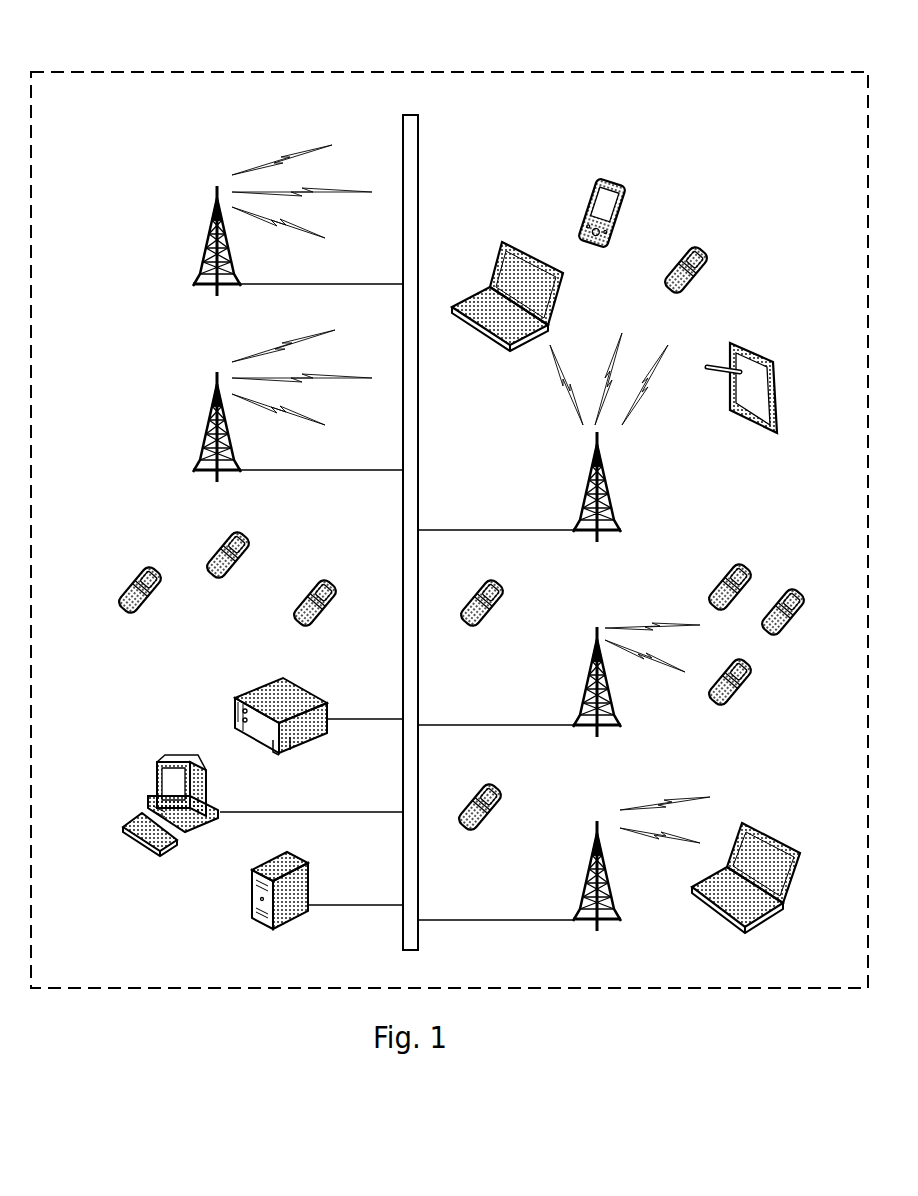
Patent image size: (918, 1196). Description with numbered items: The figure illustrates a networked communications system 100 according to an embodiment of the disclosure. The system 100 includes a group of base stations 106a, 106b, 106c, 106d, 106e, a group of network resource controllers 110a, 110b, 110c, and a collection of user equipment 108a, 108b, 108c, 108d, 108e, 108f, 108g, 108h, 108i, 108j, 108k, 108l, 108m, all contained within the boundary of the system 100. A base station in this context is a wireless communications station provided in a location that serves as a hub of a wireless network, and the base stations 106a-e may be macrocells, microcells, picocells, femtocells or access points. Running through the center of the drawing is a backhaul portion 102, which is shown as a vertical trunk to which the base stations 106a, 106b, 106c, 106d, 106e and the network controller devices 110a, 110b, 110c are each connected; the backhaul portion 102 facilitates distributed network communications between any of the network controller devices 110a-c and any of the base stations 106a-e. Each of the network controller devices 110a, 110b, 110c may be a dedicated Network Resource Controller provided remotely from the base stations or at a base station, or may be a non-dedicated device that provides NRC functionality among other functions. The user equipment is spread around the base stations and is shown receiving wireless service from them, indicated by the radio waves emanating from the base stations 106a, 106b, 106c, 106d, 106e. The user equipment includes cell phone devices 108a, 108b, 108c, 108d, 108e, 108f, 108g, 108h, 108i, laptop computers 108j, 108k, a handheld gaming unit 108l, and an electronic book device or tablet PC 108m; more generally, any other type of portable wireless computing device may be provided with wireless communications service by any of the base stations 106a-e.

The networked communications system 100 is at (310, 42).
The backhaul portion 102 is at (403, 128).
The base station 106a is at (208, 242).
The base station 106b is at (207, 425).
The base station 106c is at (588, 867).
The base station 106d is at (587, 683).
The base station 106e is at (612, 502).
The cell phone device 108a is at (133, 587).
The cell phone device 108b is at (225, 542).
The cell phone device 108c is at (298, 628).
The cell phone device 108d is at (507, 785).
The cell phone device 108e is at (742, 697).
The cell phone device 108f is at (802, 632).
The cell phone device 108g is at (755, 560).
The cell phone device 108h is at (510, 580).
The cell phone device 108i is at (720, 252).
The laptop computer 108j is at (767, 830).
The laptop computer 108k is at (505, 242).
The handheld gaming unit 108l is at (623, 203).
The tablet PC 108m is at (772, 353).
The network resource controller 110a is at (232, 717).
The network resource controller 110b is at (155, 760).
The network resource controller 110c is at (250, 910).